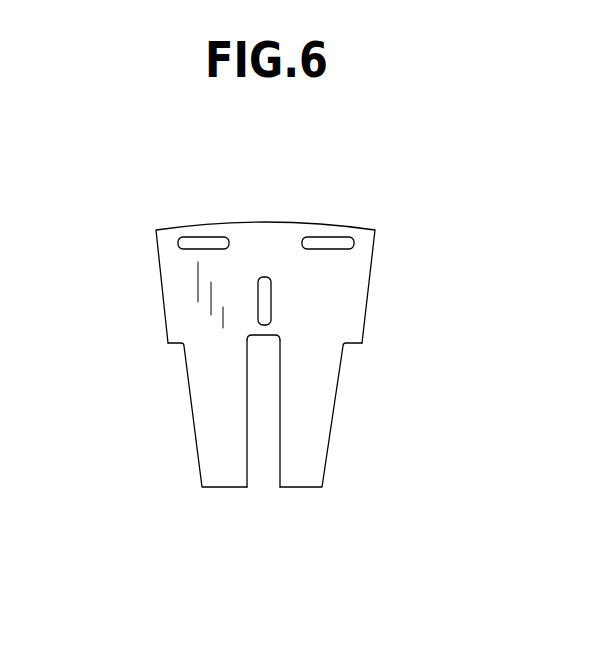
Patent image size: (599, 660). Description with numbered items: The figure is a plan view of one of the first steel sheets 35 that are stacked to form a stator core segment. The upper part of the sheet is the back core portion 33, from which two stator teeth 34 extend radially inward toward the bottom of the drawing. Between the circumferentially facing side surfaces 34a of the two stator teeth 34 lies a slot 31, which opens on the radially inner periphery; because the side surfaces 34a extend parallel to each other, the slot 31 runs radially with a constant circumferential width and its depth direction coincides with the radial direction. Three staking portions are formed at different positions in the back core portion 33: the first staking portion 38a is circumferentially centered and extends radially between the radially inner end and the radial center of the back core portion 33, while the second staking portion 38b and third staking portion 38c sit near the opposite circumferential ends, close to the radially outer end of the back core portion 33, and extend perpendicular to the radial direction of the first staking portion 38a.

The first steel sheet 35 is at (262, 198).
The back core portion 33 is at (177, 265).
The first staking portion 38a is at (271, 297).
The second staking portion 38b is at (205, 238).
The third staking portion 38c is at (330, 238).
The stator tooth 34 is at (210, 422).
The side surface of stator tooth 34a is at (140, 369).
The slot 31 is at (262, 455).